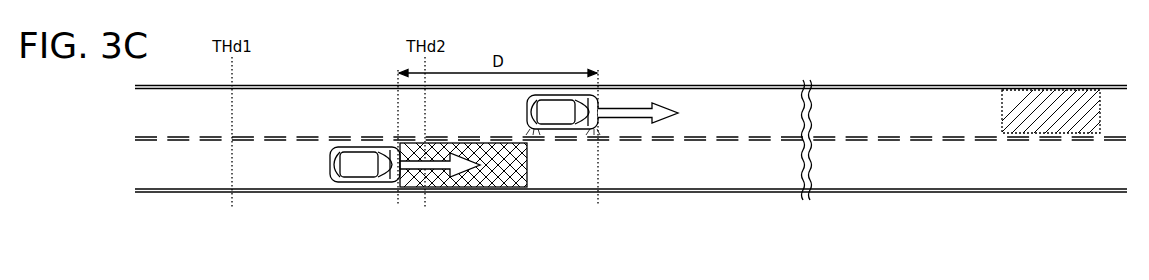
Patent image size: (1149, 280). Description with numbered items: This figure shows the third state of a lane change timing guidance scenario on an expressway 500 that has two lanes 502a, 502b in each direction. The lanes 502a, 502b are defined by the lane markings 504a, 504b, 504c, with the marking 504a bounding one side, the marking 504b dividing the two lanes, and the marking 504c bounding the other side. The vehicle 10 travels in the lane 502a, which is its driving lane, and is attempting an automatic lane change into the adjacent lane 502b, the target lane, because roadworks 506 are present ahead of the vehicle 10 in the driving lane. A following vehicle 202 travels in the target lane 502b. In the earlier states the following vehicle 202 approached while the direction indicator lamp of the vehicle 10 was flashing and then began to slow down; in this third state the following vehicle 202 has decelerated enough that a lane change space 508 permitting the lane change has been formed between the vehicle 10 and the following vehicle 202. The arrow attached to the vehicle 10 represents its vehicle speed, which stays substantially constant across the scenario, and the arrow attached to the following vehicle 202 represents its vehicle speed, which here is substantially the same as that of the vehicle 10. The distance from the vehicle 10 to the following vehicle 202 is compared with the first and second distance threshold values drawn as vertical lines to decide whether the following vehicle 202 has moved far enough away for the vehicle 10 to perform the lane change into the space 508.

The expressway 500 is at (585, 122).
The lane 502a is at (152, 110).
The lane 502b is at (607, 164).
The lane marking 504a is at (715, 85).
The lane marking 504b is at (759, 137).
The lane marking 504c is at (740, 189).
The roadworks 506 is at (1042, 108).
The lane change space 508 is at (498, 160).
The vehicle 10 is at (551, 129).
The following vehicle 202 is at (360, 182).